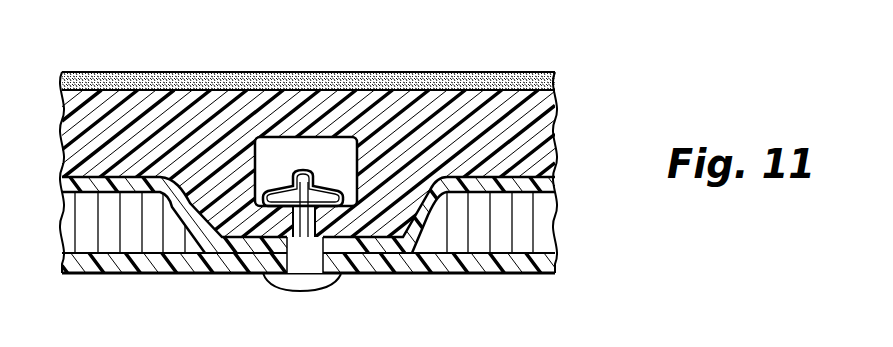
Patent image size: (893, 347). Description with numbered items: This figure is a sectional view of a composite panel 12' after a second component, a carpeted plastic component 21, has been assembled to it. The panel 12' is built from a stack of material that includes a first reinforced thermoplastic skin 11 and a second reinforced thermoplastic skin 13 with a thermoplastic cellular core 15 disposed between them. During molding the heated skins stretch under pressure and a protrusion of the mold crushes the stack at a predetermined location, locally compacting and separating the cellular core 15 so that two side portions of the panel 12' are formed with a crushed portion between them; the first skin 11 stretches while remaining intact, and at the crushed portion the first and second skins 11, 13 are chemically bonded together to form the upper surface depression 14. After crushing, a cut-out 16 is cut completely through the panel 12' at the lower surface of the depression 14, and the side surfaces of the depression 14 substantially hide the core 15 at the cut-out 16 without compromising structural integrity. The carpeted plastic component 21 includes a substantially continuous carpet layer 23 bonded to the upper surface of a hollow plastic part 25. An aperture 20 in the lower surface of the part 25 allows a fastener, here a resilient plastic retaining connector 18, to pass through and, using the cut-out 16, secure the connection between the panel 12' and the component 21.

The carpeted plastic component 21 is at (497, 56).
The carpet layer 23 is at (557, 82).
The hollow plastic part 25 is at (552, 135).
The first reinforced thermoplastic skin 11 is at (562, 185).
The composite panel 12' is at (597, 172).
The second reinforced thermoplastic skin 13 is at (548, 266).
The upper surface depression 14 is at (406, 208).
The thermoplastic cellular core 15 is at (553, 232).
The cut-out 16 is at (320, 246).
The resilient plastic retaining connector 18 is at (300, 291).
The aperture 20 is at (270, 170).